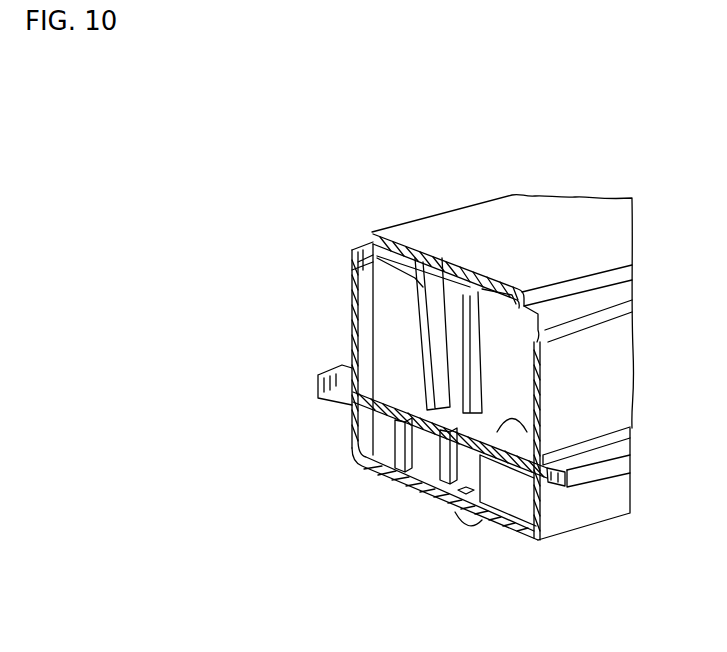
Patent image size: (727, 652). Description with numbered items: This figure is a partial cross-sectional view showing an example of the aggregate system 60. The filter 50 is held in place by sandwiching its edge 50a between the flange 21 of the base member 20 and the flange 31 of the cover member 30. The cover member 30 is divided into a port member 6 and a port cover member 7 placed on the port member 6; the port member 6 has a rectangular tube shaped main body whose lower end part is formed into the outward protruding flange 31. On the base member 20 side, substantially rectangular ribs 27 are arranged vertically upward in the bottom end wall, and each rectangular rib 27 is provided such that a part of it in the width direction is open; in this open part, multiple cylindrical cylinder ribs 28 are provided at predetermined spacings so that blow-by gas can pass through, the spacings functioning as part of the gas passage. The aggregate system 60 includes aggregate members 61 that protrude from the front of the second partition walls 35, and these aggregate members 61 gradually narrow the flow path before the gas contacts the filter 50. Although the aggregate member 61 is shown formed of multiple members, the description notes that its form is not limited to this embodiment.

The port member 6 is at (330, 323).
The port cover member 7 is at (470, 198).
The base member 20 is at (593, 537).
The flange 21 is at (613, 474).
The rectangular rib 27 is at (497, 485).
The cylinder rib 28 is at (388, 458).
The cover member 30 is at (370, 190).
The flange 31 is at (613, 448).
The second partition wall 35 is at (522, 362).
The filter 50 is at (383, 418).
The edge 50a is at (548, 464).
The aggregate system 60 is at (446, 408).
The aggregate member 61 is at (433, 323).